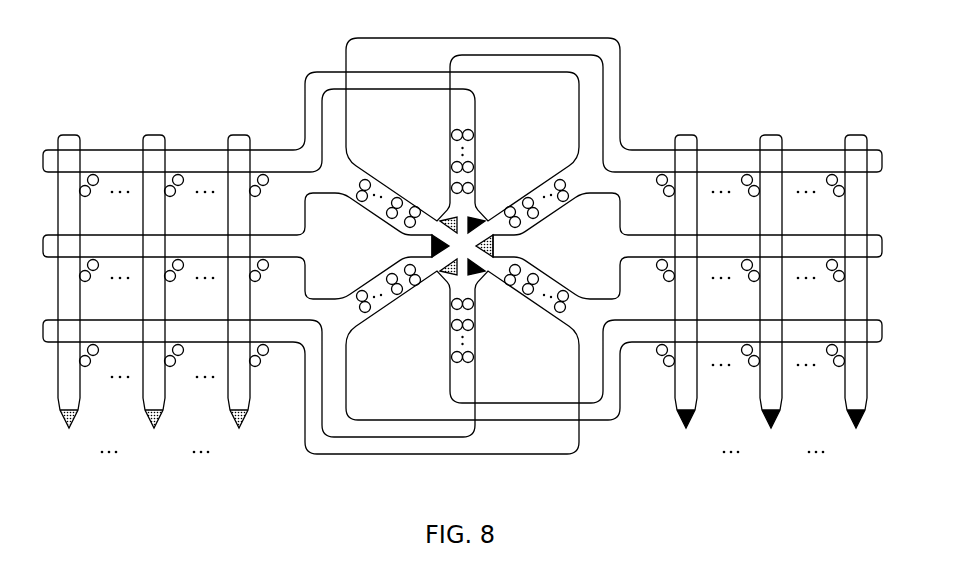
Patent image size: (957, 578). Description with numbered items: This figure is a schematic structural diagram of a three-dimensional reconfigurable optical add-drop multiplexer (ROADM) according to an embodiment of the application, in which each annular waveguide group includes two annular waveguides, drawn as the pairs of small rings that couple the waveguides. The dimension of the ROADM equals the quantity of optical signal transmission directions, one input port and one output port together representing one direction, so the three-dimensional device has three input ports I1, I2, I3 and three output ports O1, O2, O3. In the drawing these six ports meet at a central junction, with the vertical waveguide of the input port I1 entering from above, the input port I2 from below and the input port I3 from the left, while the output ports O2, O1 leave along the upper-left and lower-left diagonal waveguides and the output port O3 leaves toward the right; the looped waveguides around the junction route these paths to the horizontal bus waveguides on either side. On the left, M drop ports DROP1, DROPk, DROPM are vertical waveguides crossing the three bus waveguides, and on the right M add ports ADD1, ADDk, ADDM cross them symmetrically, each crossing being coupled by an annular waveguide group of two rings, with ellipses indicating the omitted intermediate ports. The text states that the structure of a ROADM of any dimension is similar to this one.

The input port I1 is at (477, 217).
The input port I2 is at (477, 277).
The input port I3 is at (427, 246).
The output port O1 is at (443, 277).
The output port O2 is at (443, 217).
The output port O3 is at (496, 246).
The drop port DROP1 is at (64, 299).
The drop port DROPk is at (155, 299).
The drop port DROPM is at (247, 299).
The add port ADD1 is at (688, 299).
The add port ADDk is at (769, 299).
The add port ADDM is at (858, 299).